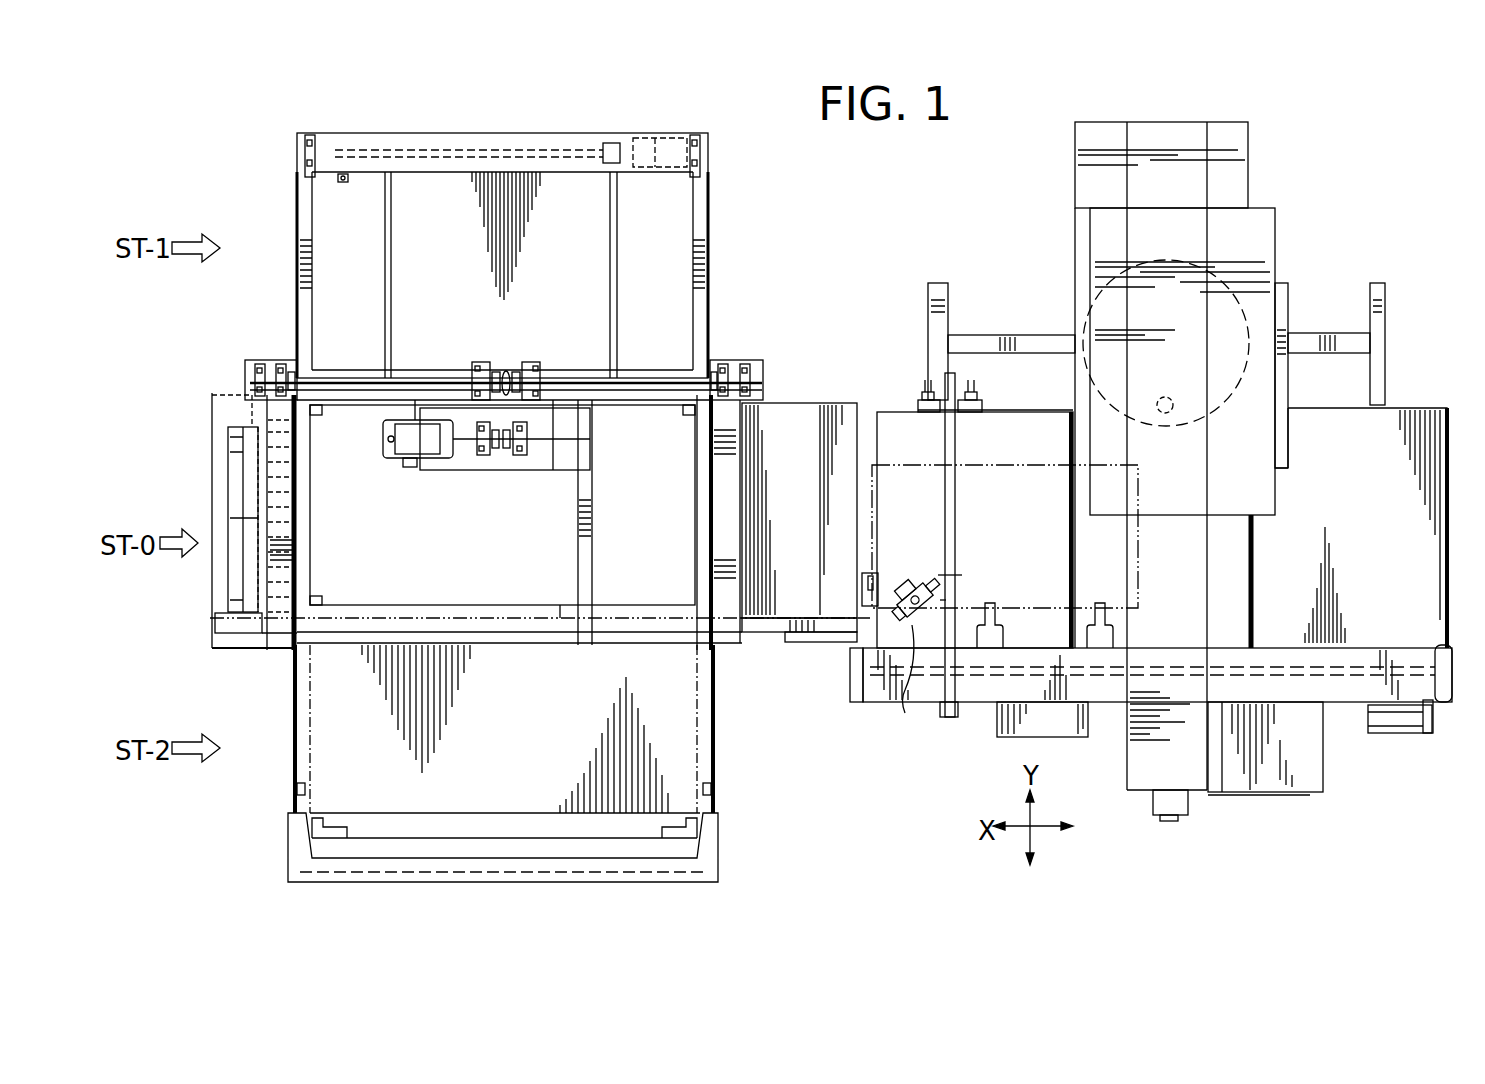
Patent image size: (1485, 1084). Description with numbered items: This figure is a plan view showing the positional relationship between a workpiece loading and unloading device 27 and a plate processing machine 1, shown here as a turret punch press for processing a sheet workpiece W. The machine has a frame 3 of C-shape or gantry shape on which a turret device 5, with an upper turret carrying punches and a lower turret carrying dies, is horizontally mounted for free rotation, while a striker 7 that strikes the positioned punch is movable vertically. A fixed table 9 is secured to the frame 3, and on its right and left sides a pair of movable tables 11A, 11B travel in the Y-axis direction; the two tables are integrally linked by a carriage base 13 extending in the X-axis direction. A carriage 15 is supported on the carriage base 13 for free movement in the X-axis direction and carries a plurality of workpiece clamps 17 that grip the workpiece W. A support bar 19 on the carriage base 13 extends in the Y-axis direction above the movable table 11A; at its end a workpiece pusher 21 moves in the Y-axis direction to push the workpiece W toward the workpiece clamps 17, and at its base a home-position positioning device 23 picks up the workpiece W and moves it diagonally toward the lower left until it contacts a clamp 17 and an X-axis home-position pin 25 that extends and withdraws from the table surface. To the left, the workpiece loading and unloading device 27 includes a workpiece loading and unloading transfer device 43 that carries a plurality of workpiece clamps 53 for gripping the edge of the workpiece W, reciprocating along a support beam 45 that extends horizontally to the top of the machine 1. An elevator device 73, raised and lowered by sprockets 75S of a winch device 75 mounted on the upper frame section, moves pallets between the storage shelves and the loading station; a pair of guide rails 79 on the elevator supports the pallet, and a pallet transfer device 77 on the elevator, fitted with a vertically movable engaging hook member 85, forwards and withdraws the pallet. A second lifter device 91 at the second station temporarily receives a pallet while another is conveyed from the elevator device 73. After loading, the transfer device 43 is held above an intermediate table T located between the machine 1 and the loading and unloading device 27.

The plate processing machine 1 is at (1272, 186).
The frame 3 is at (1128, 768).
The turret device 5 is at (1230, 292).
The striker 7 is at (1165, 396).
The fixed table 9 is at (1243, 590).
The movable table 11A is at (975, 530).
The movable table 11B is at (1367, 528).
The carriage base 13 is at (1345, 690).
The carriage 15 is at (1132, 655).
The workpiece clamps 17 is at (1085, 618).
The support bar 19 is at (957, 497).
The workpiece pusher 21 is at (972, 402).
The home-position positioning device 23 is at (905, 713).
The X-axis home-position pin 25 is at (876, 578).
The workpiece loading and unloading device 27 is at (755, 337).
The workpiece loading and unloading transfer device 43 is at (218, 581).
The support beam 45 is at (240, 630).
The workpiece clamps 53 is at (262, 440).
The elevator device 73 is at (670, 228).
The winch device 75 is at (503, 366).
The sprockets 75S is at (300, 372).
The pallet transfer device 77 is at (512, 134).
The guide rails 79 is at (313, 262).
The engaging hook member 85 is at (345, 183).
The second lifter device 91 is at (294, 762).
The intermediate table T is at (832, 405).
The workpiece W is at (1010, 465).